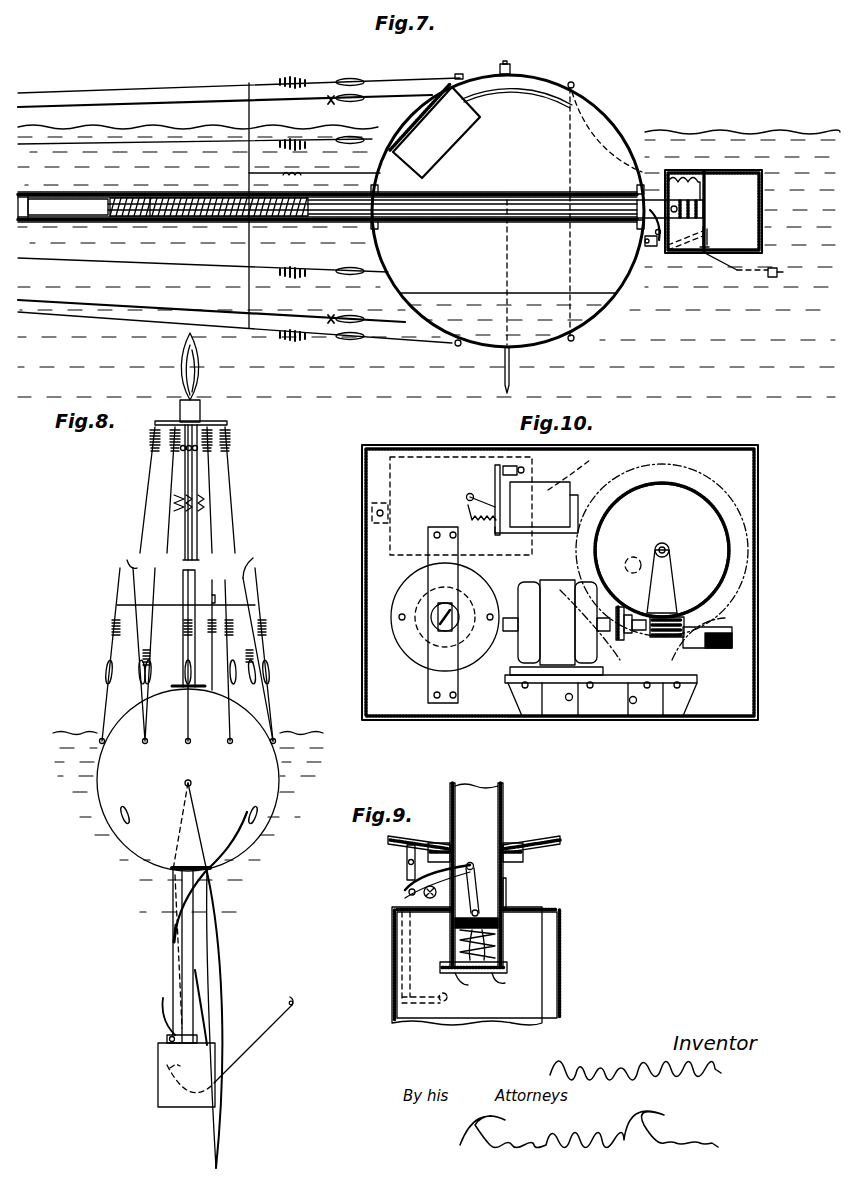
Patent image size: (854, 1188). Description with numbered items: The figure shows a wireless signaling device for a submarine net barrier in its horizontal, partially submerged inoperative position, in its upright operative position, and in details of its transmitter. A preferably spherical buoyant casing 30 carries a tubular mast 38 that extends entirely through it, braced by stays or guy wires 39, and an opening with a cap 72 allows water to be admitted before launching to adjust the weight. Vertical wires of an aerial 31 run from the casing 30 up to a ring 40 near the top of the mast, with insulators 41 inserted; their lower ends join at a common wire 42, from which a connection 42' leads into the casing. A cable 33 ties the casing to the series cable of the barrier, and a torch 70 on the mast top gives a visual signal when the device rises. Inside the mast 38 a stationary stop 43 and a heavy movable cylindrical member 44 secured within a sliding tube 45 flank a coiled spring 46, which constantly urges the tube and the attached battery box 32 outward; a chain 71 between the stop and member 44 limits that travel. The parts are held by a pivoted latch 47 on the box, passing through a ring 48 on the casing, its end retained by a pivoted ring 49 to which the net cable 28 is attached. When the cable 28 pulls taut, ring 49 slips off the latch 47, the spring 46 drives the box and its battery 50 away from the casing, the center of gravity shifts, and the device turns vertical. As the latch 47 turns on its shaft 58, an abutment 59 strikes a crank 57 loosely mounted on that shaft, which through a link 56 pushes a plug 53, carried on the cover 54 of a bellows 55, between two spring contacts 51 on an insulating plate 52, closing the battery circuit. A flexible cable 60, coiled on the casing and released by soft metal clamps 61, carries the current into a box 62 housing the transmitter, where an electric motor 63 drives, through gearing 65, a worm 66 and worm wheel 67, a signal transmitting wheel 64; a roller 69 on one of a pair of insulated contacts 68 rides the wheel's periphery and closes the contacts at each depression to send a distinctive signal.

In FIG. 7, the cable 28 is at (715, 258).
In FIG. 8, the cable 28 is at (274, 1023).
In FIG. 7, the buoyant casing 30 is at (507, 211).
In FIG. 8, the buoyant casing 30 is at (188, 780).
In FIG. 9, the buoyant casing 30 is at (388, 842).
In FIG. 7, the aerial 31 is at (68, 90).
In FIG. 8, the aerial 31 is at (96, 578).
In FIG. 7, the battery box 32 is at (764, 190).
In FIG. 8, the battery box 32 is at (158, 1090).
In FIG. 9, the battery box 32 is at (476, 966).
In FIG. 7, the cable 33 is at (500, 384).
In FIG. 8, the cable 33 is at (218, 965).
In FIG. 7, the tubular mast 38 is at (480, 193).
In FIG. 8, the tubular mast 38 is at (182, 592).
In FIG. 7, the stays or guy wires 39 is at (222, 312).
In FIG. 8, the stays or guy wires 39 is at (187, 524).
In FIG. 8, the ring 40 is at (158, 416).
In FIG. 7, the insulators 41 is at (293, 334).
In FIG. 8, the insulators 41 is at (148, 428).
In FIG. 7, the common wire 42 is at (225, 191).
In FIG. 8, the common wire 42 is at (172, 657).
In FIG. 7, the connection 42' is at (199, 139).
In FIG. 8, the connection 42' is at (228, 635).
In FIG. 7, the stationary stop 43 is at (72, 210).
In FIG. 7, the movable cylindrical member 44 is at (445, 203).
In FIG. 7, the tube 45 is at (548, 203).
In FIG. 8, the tube 45 is at (187, 945).
In FIG. 9, the tube 45 is at (505, 812).
In FIG. 7, the coiled spring 46 is at (200, 216).
In FIG. 7, the pivoted latch 47 is at (660, 245).
In FIG. 8, the pivoted latch 47 is at (163, 1018).
In FIG. 9, the pivoted latch 47 is at (405, 892).
In FIG. 7, the ring 48 is at (650, 247).
In FIG. 8, the ring 48 is at (163, 870).
In FIG. 9, the ring 48 is at (407, 873).
In FIG. 7, the pivoted ring 49 is at (713, 235).
In FIG. 8, the pivoted ring 49 is at (170, 1068).
In FIG. 9, the pivoted ring 49 is at (440, 1005).
In FIG. 7, the battery 50 is at (721, 211).
In FIG. 9, the spring contacts 51 is at (488, 987).
In FIG. 9, the insulating plate 52 is at (507, 968).
In FIG. 9, the plug 53 is at (498, 933).
In FIG. 9, the cover 54 is at (506, 888).
In FIG. 9, the bellows 55 is at (460, 950).
In FIG. 9, the link 56 is at (482, 870).
In FIG. 9, the crank 57 is at (460, 872).
In FIG. 9, the shaft 58 is at (430, 898).
In FIG. 9, the abutment 59 is at (410, 893).
In FIG. 7, the flexible cable 60 is at (646, 178).
In FIG. 8, the flexible cable 60 is at (170, 921).
In FIG. 7, the soft metal clamps 61 is at (572, 80).
In FIG. 8, the soft metal clamps 61 is at (128, 808).
In FIG. 7, the box 62 is at (435, 131).
In FIG. 10, the box 62 is at (708, 445).
In FIG. 10, the electric motor 63 is at (561, 622).
In FIG. 10, the signal transmitting wheel 64 is at (722, 493).
In FIG. 10, the gearing 65 is at (631, 633).
In FIG. 10, the worm 66 is at (662, 581).
In FIG. 10, the worm wheel 67 is at (681, 559).
In FIG. 10, the insulated contacts 68 is at (732, 622).
In FIG. 10, the roller 69 is at (667, 638).
In FIG. 8, the torch 70 is at (200, 403).
In FIG. 7, the chain 71 is at (157, 219).
In FIG. 7, the cap 72 is at (498, 63).